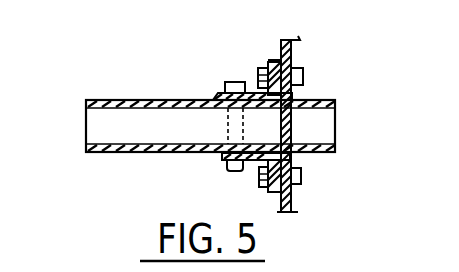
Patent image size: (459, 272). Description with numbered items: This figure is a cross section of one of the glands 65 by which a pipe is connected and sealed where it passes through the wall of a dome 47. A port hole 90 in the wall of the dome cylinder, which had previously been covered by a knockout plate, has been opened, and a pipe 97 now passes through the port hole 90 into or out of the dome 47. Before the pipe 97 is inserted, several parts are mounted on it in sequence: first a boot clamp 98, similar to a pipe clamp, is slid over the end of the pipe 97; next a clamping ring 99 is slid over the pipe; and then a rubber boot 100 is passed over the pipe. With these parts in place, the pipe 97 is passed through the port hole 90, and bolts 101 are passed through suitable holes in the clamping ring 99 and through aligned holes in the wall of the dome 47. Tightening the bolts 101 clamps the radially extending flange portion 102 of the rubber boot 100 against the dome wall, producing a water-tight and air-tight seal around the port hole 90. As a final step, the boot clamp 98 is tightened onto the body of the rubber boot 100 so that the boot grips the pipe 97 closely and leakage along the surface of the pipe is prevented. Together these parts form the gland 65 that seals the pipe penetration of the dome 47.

The dome 47 is at (292, 52).
The gland 65 is at (250, 78).
The port hole 90 is at (290, 155).
The pipe 97 is at (145, 153).
The boot clamp 98 is at (225, 82).
The clamping ring 99 is at (271, 64).
The rubber boot 100 is at (217, 157).
The bolts 101 is at (303, 78).
The radially extending flange portion 102 is at (273, 58).